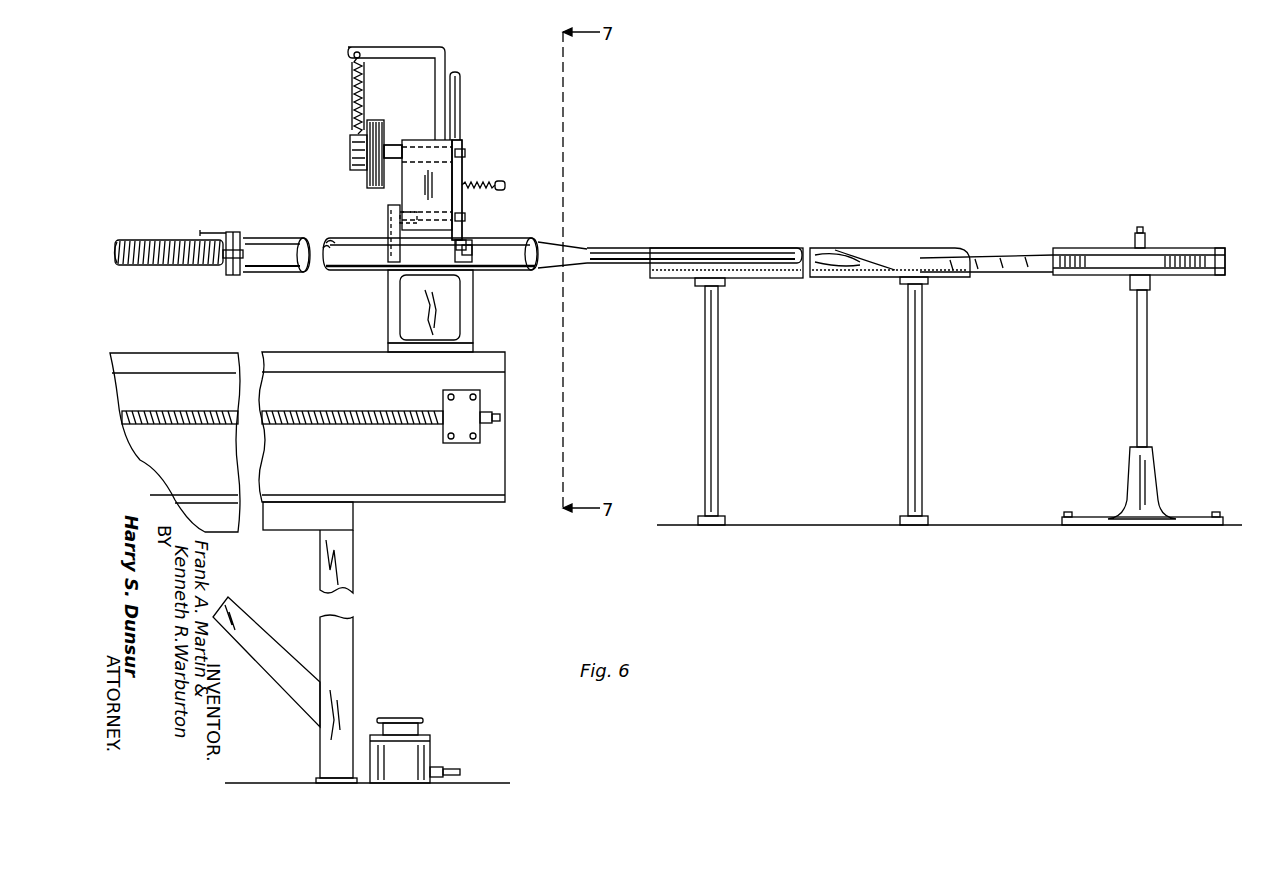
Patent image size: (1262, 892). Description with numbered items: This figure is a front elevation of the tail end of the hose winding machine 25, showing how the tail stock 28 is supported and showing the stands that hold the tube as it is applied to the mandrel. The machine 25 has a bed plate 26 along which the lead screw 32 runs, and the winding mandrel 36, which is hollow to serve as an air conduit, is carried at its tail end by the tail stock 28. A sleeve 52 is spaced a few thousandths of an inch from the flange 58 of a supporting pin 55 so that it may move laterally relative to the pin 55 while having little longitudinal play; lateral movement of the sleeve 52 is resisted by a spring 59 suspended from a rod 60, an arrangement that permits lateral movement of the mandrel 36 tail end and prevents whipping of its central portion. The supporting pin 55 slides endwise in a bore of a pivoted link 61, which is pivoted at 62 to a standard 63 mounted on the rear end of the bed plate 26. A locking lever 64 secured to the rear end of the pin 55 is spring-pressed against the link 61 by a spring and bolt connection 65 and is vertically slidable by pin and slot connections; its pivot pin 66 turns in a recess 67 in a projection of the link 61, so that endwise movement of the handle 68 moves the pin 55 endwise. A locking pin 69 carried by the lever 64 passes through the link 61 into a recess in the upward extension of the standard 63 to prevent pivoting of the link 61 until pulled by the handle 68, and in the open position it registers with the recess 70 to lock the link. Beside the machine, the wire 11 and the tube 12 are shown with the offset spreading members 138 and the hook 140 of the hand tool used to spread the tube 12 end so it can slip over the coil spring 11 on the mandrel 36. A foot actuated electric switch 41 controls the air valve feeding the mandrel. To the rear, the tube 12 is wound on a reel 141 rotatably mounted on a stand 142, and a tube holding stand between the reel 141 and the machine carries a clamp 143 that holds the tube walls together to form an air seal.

The helically wound spring steel wire 11 is at (150, 266).
The extruded seamless tube 12 is at (298, 271).
The machine 25 is at (393, 505).
The bed plate 26 is at (337, 350).
The tail stock 28 is at (463, 136).
The lead screw 32 is at (395, 425).
The winding mandrel 36 is at (117, 258).
The foot actuated electric switch 41 is at (432, 760).
The sleeve 52 is at (352, 162).
The supporting pin 55 is at (395, 145).
The flange 58 is at (375, 190).
The spring 59 is at (352, 90).
The rod 60 is at (445, 50).
The pivoted link 61 is at (427, 185).
The pivot 62 is at (475, 272).
The standard 63 is at (475, 330).
The locking lever 64 is at (462, 166).
The spring and bolt connection 65 is at (500, 191).
The pivot pin 66 is at (462, 240).
The recess 67 is at (470, 248).
The handle 68 is at (462, 110).
The locking pin 69 is at (412, 216).
The recess 70 is at (388, 210).
The offset spreading members 138 is at (248, 213).
The hook 140 is at (203, 232).
The reel 141 is at (1098, 247).
The stand 142 is at (1148, 404).
The clamp 143 is at (853, 258).